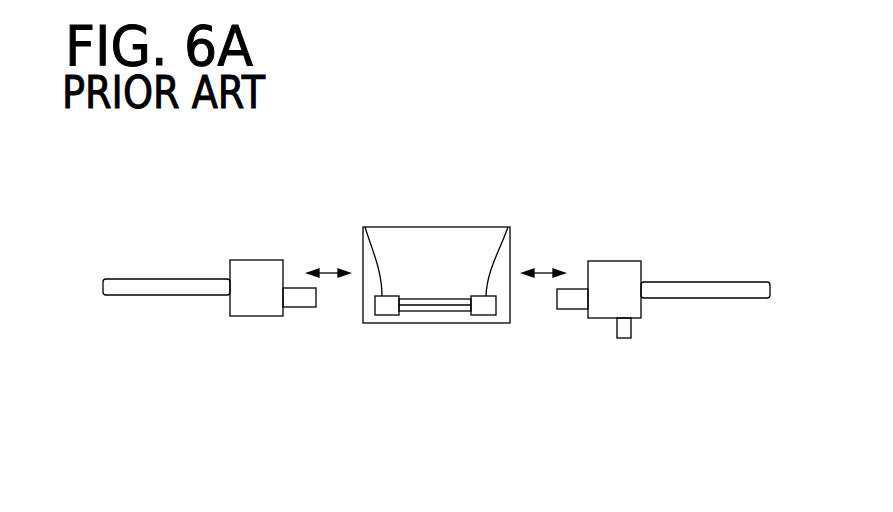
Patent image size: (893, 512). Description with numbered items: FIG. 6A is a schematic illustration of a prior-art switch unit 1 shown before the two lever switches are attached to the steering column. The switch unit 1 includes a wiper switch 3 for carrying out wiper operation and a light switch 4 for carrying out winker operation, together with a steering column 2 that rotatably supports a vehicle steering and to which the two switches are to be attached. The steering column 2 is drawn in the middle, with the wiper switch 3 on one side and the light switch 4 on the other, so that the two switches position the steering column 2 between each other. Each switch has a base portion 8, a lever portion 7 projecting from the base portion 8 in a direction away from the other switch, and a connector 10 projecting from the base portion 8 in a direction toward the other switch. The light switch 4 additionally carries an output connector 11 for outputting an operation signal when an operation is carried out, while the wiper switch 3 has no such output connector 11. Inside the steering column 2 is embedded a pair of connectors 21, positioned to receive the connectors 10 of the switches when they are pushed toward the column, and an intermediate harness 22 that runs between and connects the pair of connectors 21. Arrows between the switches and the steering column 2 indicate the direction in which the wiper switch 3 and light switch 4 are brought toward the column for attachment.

The switch unit 1 is at (568, 161).
The steering column 2 is at (437, 242).
The wiper switch 3 is at (260, 257).
The light switch 4 is at (619, 254).
The lever portion 7 is at (125, 279).
The base portion 8 is at (255, 305).
The connector 10 is at (297, 302).
The output connector 11 is at (622, 340).
The connector 21 is at (366, 227).
The intermediate harness 22 is at (433, 311).